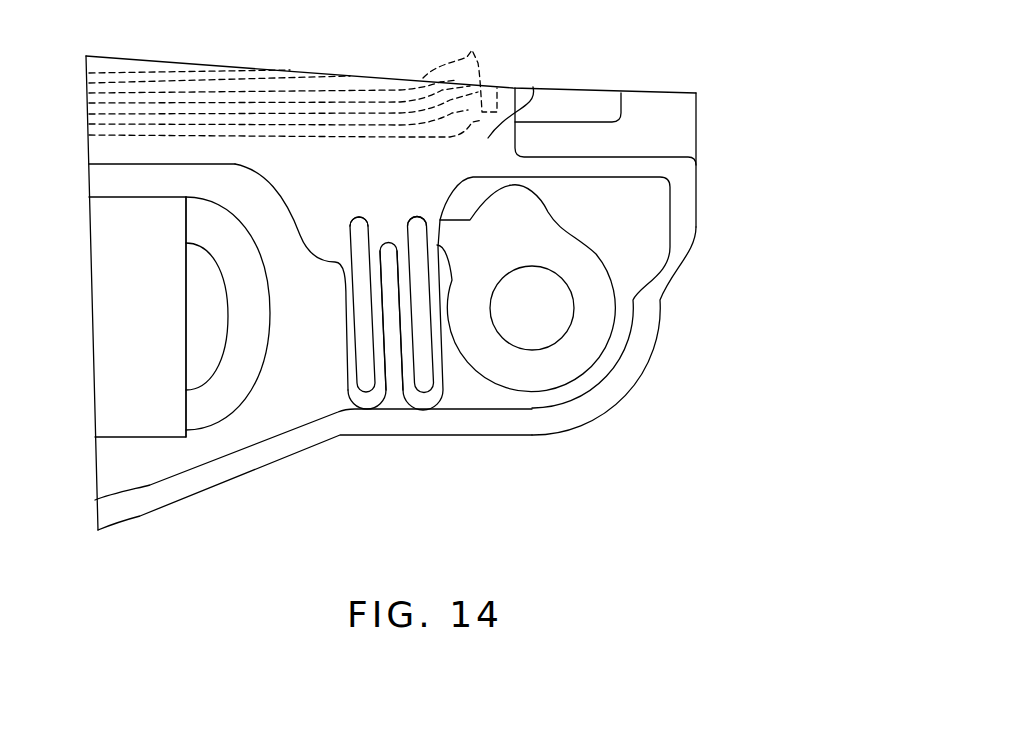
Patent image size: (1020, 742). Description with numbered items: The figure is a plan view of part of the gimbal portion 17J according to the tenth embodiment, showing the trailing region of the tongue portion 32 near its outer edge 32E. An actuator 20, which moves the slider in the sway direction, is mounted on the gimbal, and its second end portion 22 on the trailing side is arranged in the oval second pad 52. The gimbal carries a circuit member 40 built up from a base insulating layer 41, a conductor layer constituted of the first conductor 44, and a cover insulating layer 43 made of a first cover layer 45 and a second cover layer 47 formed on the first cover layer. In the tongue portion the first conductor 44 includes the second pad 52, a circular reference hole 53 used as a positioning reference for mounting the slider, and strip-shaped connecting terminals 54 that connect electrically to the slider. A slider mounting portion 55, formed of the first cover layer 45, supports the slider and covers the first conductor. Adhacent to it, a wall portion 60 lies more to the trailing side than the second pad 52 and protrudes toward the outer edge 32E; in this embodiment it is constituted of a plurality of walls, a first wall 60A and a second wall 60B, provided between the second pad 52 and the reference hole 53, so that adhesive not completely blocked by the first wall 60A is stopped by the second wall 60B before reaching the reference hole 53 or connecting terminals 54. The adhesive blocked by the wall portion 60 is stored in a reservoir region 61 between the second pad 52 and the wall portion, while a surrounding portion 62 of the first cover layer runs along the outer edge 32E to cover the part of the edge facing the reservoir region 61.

The gimbal portion 17J is at (697, 305).
The actuator 20 is at (135, 409).
The second end portion 22 is at (187, 410).
The tongue portion 32 is at (547, 435).
The outer edge 32E is at (475, 437).
The circuit member 40 is at (453, 392).
The base insulating layer 41 is at (697, 128).
The cover insulating layer 43 is at (518, 137).
The first conductor 44 is at (472, 48).
The first cover layer 45 is at (533, 87).
The second cover layer 47 is at (360, 222).
The second pad 52 is at (205, 330).
The reference hole 53 is at (566, 296).
The connecting terminals 54 is at (612, 108).
The slider mounting portion 55 is at (233, 143).
The wall portion 60 is at (455, 482).
The first wall 60A is at (373, 351).
The second wall 60B is at (428, 352).
The reservoir region 61 is at (315, 312).
The surrounding portion 62 is at (297, 438).